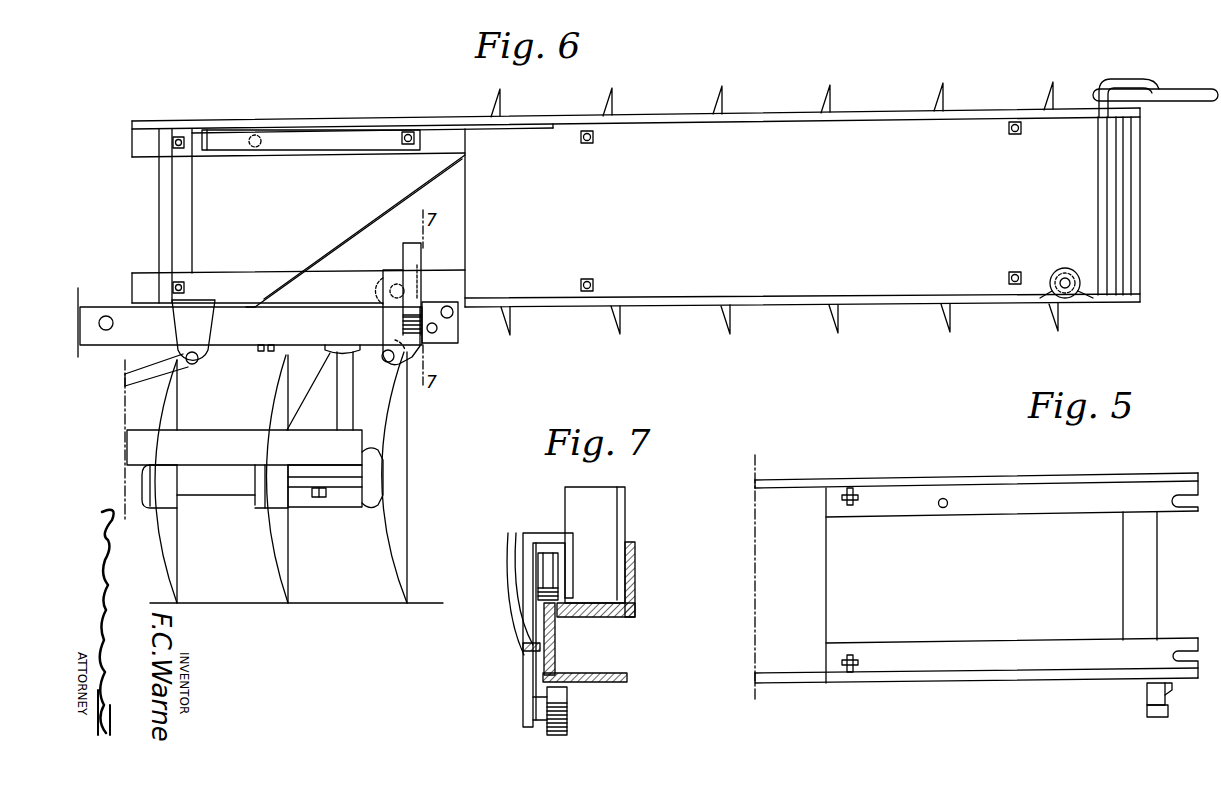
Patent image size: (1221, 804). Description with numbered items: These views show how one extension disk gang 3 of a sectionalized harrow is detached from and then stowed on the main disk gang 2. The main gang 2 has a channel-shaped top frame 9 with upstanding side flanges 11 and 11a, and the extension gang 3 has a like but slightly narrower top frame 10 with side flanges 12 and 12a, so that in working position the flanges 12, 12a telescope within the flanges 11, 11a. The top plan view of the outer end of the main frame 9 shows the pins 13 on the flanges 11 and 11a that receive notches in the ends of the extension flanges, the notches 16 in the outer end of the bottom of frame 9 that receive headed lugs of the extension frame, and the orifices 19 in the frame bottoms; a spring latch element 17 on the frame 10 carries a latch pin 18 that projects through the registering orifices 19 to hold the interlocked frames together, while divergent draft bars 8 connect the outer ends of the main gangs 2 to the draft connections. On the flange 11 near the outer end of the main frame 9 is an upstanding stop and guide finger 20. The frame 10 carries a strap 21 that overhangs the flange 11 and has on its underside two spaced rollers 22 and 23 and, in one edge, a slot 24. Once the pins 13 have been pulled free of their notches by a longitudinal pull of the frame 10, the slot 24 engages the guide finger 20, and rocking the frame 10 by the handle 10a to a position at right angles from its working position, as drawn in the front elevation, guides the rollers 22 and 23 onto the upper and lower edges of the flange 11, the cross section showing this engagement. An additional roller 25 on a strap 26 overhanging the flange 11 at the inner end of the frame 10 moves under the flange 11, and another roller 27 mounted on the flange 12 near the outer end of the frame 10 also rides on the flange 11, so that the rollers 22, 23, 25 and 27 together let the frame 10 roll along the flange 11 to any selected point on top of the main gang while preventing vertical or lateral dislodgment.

In FIG. 6, the main disk gang 2 is at (284, 474).
In FIG. 6, the extension disk gang 3 is at (774, 208).
In FIG. 6, the divergent draft bars 8 is at (214, 443).
In FIG. 5, the top frame 9 is at (812, 598).
In FIG. 6, the top frame 10 is at (668, 278).
In FIG. 6, the handle 10a is at (1190, 90).
In FIG. 6, the side flange 11 is at (292, 328).
In FIG. 5, the side flange 11 is at (975, 672).
In FIG. 7, the side flange 11 is at (556, 651).
In FIG. 5, the side flange 11a is at (996, 485).
In FIG. 6, the side flange 12 is at (540, 306).
In FIG. 7, the side flange 12 is at (636, 583).
In FIG. 6, the side flange 12a is at (316, 120).
In FIG. 6, the pins 13 is at (106, 316).
In FIG. 5, the pins 13 is at (849, 503).
In FIG. 5, the notches 16 is at (1174, 497).
In FIG. 6, the spring latch element 17 is at (346, 142).
In FIG. 6, the latch pin 18 is at (254, 150).
In FIG. 5, the orifices 19 is at (942, 510).
In FIG. 6, the stop and guide finger 20 is at (403, 256).
In FIG. 5, the stop and guide finger 20 is at (1150, 698).
In FIG. 7, the stop and guide finger 20 is at (512, 564).
In FIG. 6, the strap 21 is at (395, 321).
In FIG. 7, the strap 21 is at (526, 607).
In FIG. 6, the roller 22 is at (389, 290).
In FIG. 7, the roller 22 is at (549, 560).
In FIG. 6, the roller 23 is at (384, 368).
In FIG. 7, the roller 23 is at (566, 708).
In FIG. 6, the slot 24 is at (440, 335).
In FIG. 7, the slot 24 is at (526, 652).
In FIG. 6, the roller 25 is at (200, 364).
In FIG. 6, the strap 26 is at (200, 323).
In FIG. 6, the roller 27 is at (1052, 270).